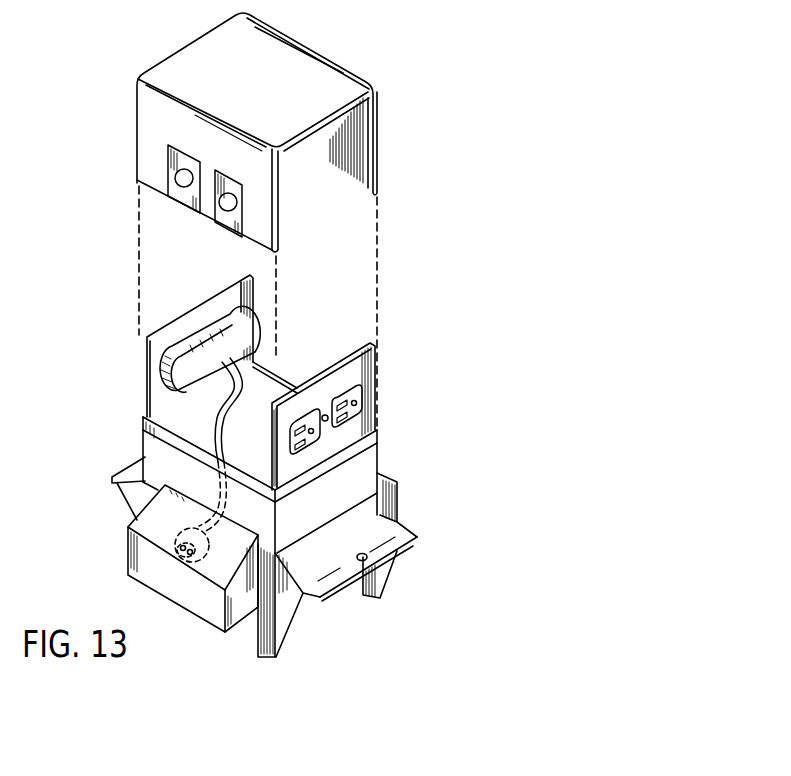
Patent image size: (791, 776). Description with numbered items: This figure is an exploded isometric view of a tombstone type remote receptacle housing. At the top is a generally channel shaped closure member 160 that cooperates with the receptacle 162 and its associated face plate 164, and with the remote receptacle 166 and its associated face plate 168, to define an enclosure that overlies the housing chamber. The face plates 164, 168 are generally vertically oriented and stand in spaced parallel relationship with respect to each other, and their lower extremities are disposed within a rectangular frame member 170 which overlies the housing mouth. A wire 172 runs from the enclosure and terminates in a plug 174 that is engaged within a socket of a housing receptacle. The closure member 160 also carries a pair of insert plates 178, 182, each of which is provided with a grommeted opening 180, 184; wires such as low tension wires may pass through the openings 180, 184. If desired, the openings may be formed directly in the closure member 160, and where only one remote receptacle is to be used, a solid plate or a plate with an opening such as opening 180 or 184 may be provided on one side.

The closure member 160 is at (307, 72).
The receptacle 162 is at (228, 318).
The face plate 164 is at (158, 348).
The remote receptacle 166 is at (359, 410).
The face plate 168 is at (362, 368).
The rectangular frame member 170 is at (373, 445).
The wire 172 is at (222, 427).
The plug 174 is at (182, 538).
The insert plate 178 is at (168, 163).
The grommeted opening 180 is at (172, 178).
The insert plate 182 is at (238, 188).
The grommeted opening 184 is at (238, 203).